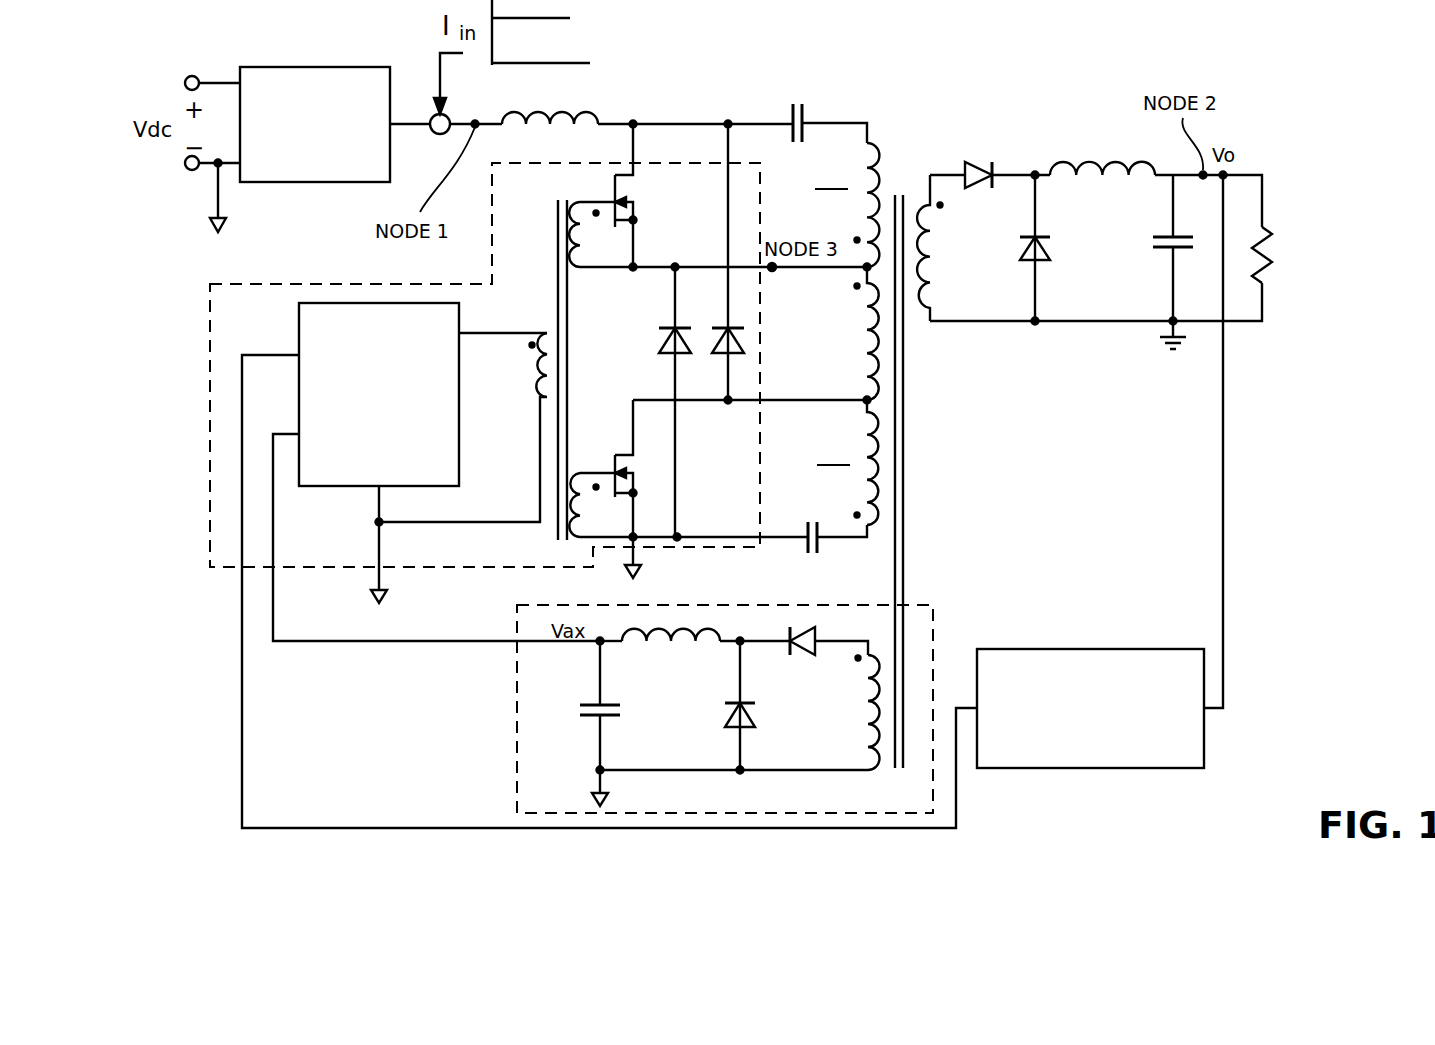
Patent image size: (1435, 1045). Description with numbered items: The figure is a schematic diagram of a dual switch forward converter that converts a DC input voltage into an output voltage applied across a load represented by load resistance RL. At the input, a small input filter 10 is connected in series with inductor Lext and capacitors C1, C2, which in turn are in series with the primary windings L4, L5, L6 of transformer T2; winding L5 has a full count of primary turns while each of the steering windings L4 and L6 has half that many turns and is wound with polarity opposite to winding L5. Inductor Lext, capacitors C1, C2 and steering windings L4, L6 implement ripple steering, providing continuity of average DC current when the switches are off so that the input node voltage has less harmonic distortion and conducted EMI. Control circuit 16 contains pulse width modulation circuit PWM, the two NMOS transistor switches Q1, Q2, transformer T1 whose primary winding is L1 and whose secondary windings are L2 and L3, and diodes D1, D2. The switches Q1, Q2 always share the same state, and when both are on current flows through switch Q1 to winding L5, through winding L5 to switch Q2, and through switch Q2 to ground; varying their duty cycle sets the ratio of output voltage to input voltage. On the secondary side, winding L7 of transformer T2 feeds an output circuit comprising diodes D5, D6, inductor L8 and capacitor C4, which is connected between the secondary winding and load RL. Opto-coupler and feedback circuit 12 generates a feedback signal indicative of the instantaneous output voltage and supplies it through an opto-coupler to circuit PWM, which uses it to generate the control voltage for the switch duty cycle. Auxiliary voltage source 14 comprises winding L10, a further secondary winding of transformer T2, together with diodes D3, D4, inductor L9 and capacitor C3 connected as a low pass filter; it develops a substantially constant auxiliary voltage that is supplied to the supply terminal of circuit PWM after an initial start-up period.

The input filter 10 is at (290, 67).
The opto-coupler and feedback circuit 12 is at (1093, 648).
The auxiliary voltage source 14 is at (517, 698).
The control circuit 16 is at (463, 572).
The inductor Lext is at (550, 138).
The capacitor C1 is at (816, 103).
The capacitor C2 is at (825, 549).
The capacitor C3 is at (581, 717).
The capacitor C4 is at (1170, 248).
The diode D1 is at (669, 402).
The diode D2 is at (720, 262).
The diode D3 is at (721, 705).
The diode D4 is at (818, 634).
The diode D5 is at (978, 159).
The diode D6 is at (1045, 248).
The switch Q1 is at (622, 195).
The switch Q2 is at (622, 489).
The transformer T1 is at (549, 329).
The transformer T2 is at (892, 148).
The primary winding L1 is at (542, 384).
The secondary winding L2 is at (582, 270).
The secondary winding L3 is at (580, 471).
The steering winding L4 is at (870, 140).
The primary winding L5 is at (867, 300).
The steering winding L6 is at (876, 442).
The secondary winding L7 is at (918, 195).
The inductor L8 is at (1090, 163).
The inductor L9 is at (661, 632).
The winding L10 is at (872, 735).
The load resistance RL is at (1280, 255).
The pulse width modulation circuit PWM is at (379, 394).